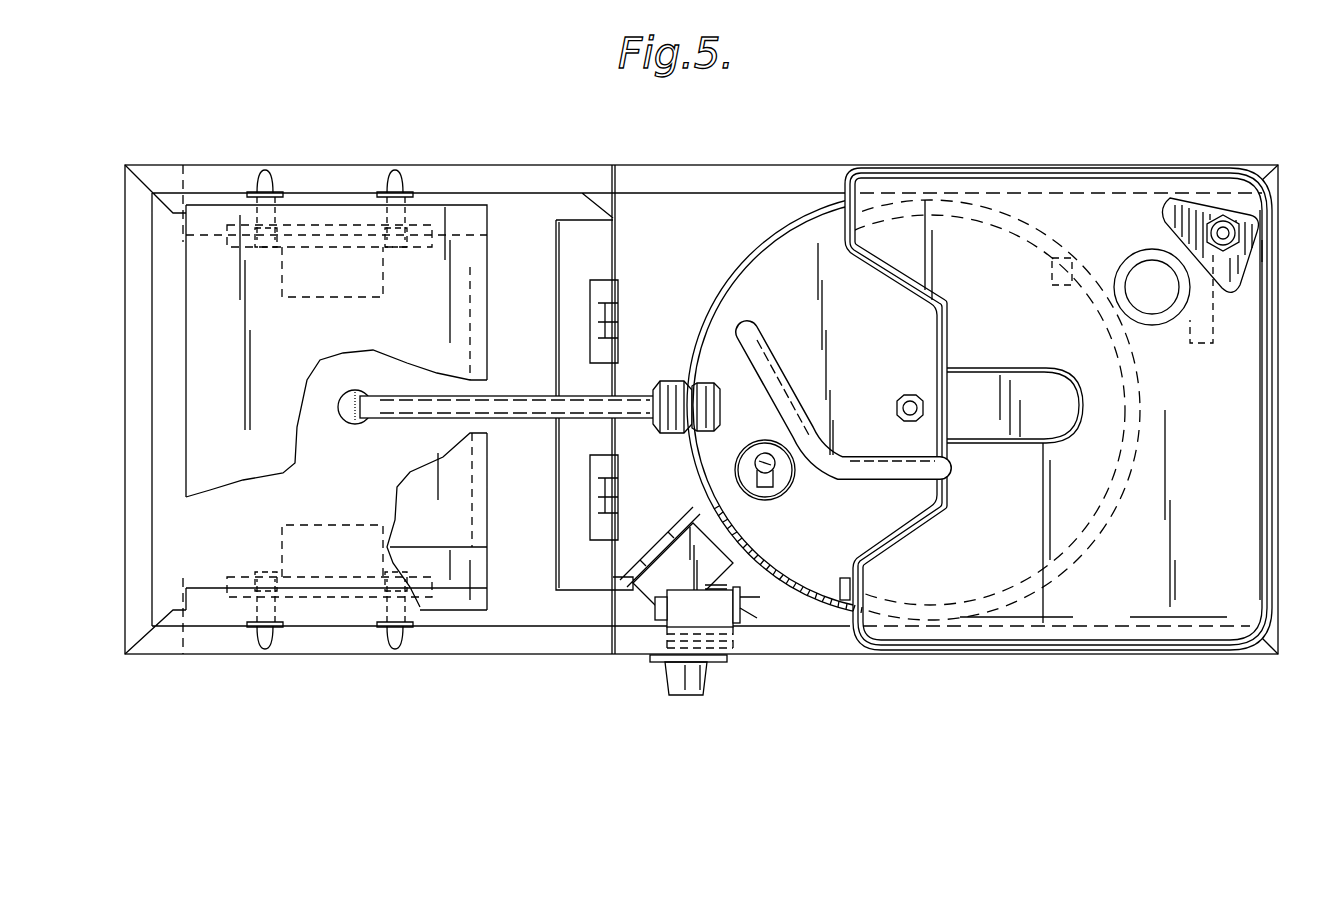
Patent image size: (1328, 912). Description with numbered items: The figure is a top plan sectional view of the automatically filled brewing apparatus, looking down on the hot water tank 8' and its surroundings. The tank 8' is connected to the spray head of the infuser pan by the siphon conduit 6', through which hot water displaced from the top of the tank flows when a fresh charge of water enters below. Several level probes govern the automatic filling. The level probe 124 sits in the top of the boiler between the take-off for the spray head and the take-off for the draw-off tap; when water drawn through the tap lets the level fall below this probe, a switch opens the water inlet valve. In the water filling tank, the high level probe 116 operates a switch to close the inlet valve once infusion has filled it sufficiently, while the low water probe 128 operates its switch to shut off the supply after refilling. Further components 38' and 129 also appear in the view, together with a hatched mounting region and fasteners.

The siphon conduit 6' is at (529, 391).
The hot water tank 8' is at (875, 405).
The conduit 38' is at (843, 429).
The high level probe 116 is at (828, 583).
The level probe 124 is at (775, 488).
The low water probe 128 is at (1262, 250).
The mounting bracket 129 is at (1178, 207).